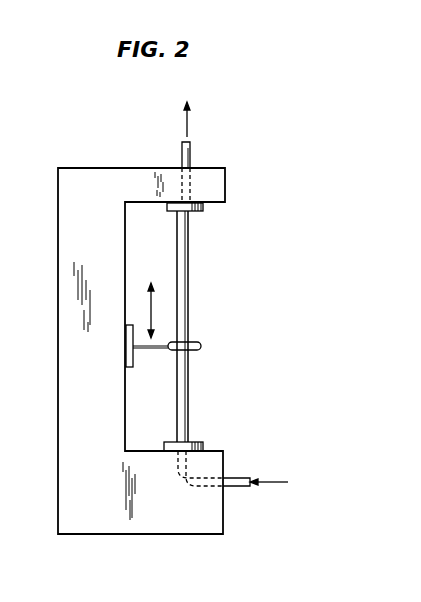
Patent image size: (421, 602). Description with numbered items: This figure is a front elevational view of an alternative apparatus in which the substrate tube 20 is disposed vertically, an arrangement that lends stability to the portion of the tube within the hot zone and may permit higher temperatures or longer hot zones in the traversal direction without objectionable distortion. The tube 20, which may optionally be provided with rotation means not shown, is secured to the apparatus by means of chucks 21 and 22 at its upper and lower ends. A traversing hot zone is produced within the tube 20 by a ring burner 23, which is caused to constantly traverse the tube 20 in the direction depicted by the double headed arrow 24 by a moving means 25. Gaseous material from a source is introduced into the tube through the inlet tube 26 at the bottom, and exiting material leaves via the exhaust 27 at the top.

The tube 20 is at (184, 275).
The chuck 21 is at (201, 211).
The chuck 22 is at (194, 441).
The ring burner 23 is at (202, 346).
The double headed arrow 24 is at (153, 303).
The moving means 25 is at (132, 357).
The inlet tube 26 is at (238, 486).
The exhaust 27 is at (182, 153).